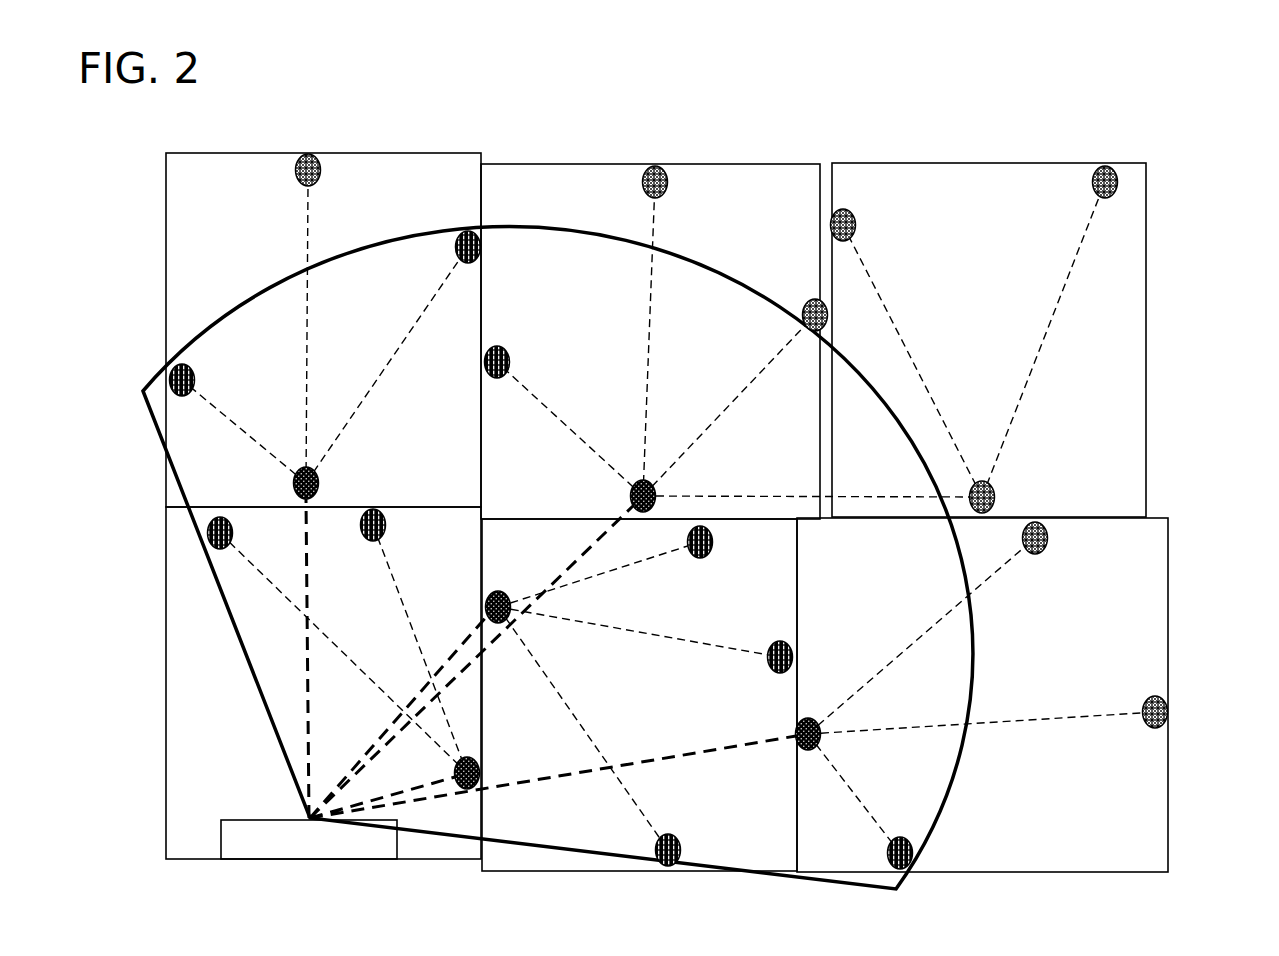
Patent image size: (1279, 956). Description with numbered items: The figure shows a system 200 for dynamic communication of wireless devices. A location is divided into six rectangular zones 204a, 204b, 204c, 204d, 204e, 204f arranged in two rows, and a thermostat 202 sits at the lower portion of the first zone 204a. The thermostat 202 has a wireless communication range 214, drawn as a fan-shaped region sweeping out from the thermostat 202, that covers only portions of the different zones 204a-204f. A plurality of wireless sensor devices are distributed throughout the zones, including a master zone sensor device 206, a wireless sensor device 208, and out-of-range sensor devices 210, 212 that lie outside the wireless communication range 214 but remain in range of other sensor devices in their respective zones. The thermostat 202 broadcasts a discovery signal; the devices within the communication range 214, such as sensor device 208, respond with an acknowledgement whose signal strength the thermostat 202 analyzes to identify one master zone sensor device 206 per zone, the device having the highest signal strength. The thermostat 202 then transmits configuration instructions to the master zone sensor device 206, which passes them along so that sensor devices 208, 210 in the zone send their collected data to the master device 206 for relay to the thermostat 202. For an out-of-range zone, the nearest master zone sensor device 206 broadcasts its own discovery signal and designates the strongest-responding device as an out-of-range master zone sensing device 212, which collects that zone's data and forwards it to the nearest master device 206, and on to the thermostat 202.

The system 200 is at (1168, 127).
The thermostat 202 is at (309, 839).
The zone 204a is at (240, 695).
The zone 204b is at (371, 343).
The zone 204c is at (665, 712).
The zone 204d is at (730, 357).
The zone 204e is at (1045, 712).
The zone 204f is at (1013, 357).
The master zone sensor device 206 is at (317, 482).
The wireless sensor device 208 is at (509, 357).
The out-of-range sensor device 210 is at (318, 160).
The out-of-range master zone sensing device 212 is at (995, 490).
The wireless communication range 214 is at (150, 428).